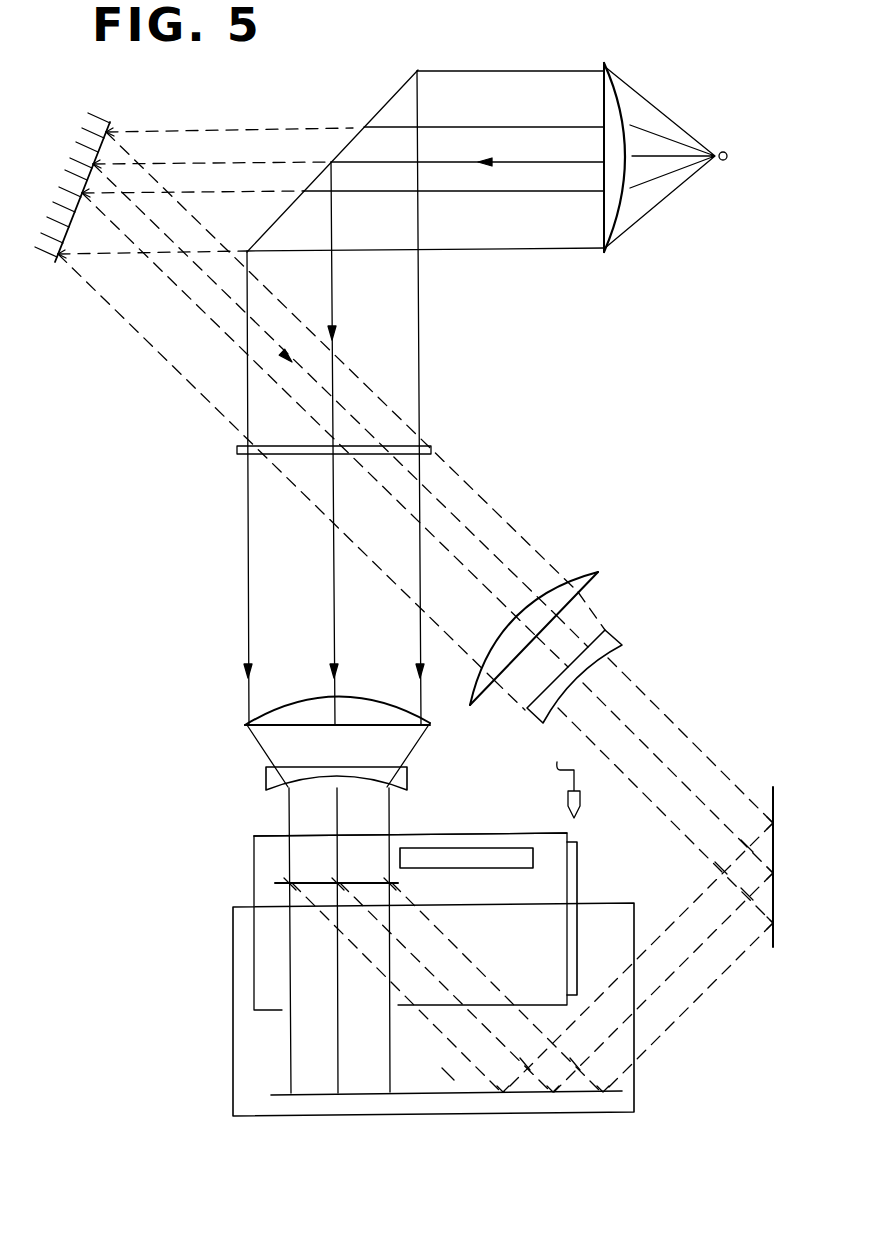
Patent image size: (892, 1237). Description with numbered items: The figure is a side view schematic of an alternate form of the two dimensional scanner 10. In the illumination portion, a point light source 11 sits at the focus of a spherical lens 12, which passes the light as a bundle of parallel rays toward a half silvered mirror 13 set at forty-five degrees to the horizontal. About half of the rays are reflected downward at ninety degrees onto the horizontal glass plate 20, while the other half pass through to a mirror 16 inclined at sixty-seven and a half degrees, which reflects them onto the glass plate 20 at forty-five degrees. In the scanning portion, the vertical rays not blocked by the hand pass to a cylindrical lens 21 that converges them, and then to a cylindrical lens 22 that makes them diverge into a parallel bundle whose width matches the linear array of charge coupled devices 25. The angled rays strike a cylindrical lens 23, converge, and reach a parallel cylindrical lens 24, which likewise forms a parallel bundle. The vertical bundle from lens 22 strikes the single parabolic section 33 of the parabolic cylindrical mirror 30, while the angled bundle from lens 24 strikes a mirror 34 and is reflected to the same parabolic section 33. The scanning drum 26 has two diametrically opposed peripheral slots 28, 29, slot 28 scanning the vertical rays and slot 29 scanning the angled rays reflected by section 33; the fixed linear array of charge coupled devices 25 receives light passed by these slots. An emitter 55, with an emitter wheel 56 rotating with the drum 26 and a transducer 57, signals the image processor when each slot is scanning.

The two dimensional scanner 10 is at (420, 51).
The point light source 11 is at (715, 150).
The spherical lens 12 is at (604, 63).
The half silvered mirror 13 is at (388, 100).
The mirror 16 is at (112, 122).
The glass plate 20 is at (432, 446).
The cylindrical lens 21 is at (248, 722).
The cylindrical lens 22 is at (266, 786).
The cylindrical lens 23 is at (598, 572).
The cylindrical lens 24 is at (612, 634).
The linear array of charge coupled devices 25 is at (278, 883).
The scanning drum 26 is at (254, 836).
The peripheral slot 28 is at (285, 1010).
The peripheral slot 29 is at (476, 848).
The parabolic cylindrical mirror 30 is at (656, 1077).
The parabolic section 33 is at (262, 1112).
The mirror 34 is at (773, 790).
The emitter 55 is at (596, 828).
The emitter wheel 56 is at (578, 850).
The transducer 57 is at (566, 801).